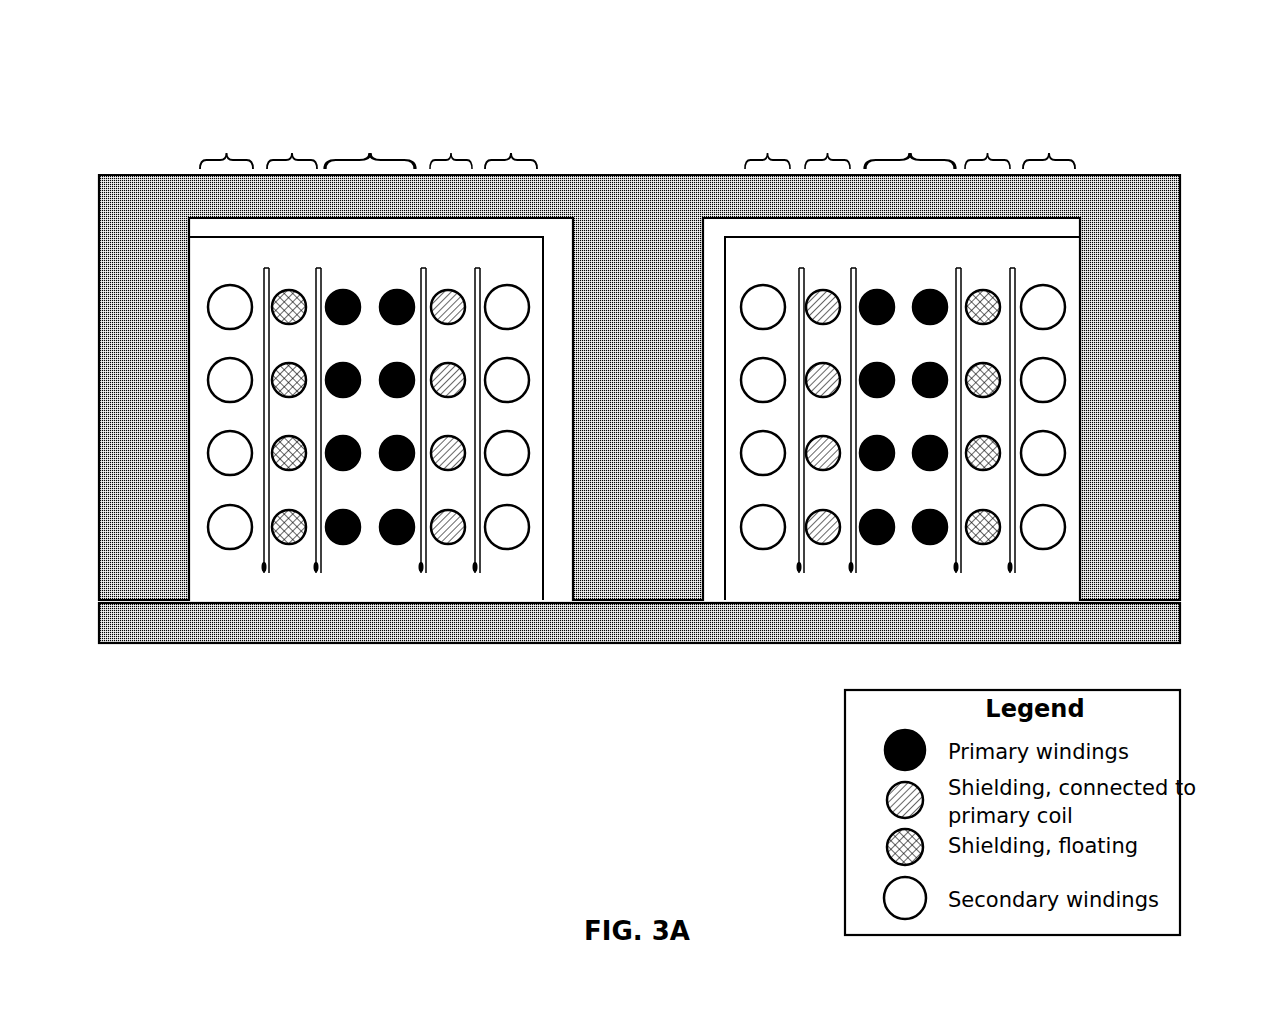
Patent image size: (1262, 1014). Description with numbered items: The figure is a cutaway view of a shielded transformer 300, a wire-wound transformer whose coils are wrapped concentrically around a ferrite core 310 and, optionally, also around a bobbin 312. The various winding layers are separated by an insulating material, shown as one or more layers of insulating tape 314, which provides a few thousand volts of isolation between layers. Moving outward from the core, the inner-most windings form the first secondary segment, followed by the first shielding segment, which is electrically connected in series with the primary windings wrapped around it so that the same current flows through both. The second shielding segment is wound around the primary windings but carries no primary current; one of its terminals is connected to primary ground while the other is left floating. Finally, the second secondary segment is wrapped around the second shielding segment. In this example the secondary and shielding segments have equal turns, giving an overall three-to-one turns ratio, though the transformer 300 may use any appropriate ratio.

The shielded transformer 300 is at (639, 357).
The ferrite core 310 is at (627, 538).
The bobbin 312 is at (555, 540).
The insulating tape 314 is at (1008, 573).